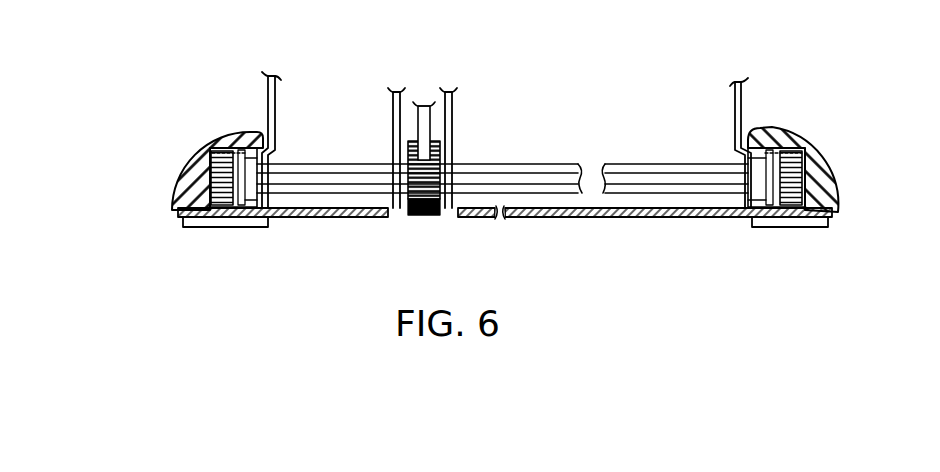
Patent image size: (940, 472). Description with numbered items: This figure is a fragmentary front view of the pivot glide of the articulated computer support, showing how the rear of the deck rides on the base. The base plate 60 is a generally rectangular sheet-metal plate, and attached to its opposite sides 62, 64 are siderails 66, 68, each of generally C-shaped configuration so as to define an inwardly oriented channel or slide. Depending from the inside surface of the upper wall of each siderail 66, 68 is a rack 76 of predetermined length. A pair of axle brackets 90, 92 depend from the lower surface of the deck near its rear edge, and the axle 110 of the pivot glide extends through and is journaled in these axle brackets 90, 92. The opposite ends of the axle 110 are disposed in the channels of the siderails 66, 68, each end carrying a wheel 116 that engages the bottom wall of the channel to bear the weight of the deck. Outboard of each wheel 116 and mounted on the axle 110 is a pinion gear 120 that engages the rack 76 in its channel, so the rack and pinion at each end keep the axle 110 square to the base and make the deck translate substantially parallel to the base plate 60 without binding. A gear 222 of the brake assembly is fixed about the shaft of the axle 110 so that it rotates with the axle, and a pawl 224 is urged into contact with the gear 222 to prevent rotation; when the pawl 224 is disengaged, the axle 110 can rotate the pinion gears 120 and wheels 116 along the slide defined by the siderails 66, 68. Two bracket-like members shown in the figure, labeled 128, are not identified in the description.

The base plate 60 is at (592, 219).
The side of base plate 62 is at (172, 218).
The side of base plate 64 is at (830, 222).
The siderail 66 is at (198, 146).
The siderail 68 is at (820, 140).
The rack 76 is at (222, 146).
The axle bracket 90 is at (278, 110).
The axle bracket 92 is at (735, 118).
The axle 110 is at (333, 163).
The wheel 116 is at (278, 218).
The pinion gear 120 is at (224, 206).
The bracket 128 is at (454, 102).
The gear 222 is at (453, 163).
The pawl 224 is at (422, 105).